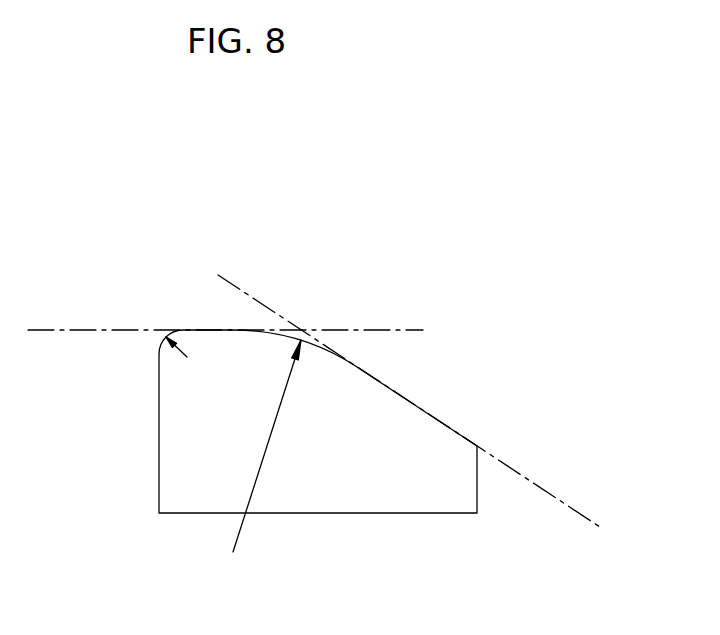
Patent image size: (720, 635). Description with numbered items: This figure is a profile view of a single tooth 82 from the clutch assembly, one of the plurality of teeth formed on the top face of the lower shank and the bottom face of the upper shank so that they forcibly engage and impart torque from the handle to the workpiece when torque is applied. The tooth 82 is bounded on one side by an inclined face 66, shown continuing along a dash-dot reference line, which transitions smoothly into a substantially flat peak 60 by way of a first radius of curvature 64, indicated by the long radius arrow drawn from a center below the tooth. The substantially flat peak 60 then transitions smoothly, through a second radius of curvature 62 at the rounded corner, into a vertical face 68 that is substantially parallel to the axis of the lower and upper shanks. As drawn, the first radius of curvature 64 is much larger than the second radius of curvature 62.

The substantially flat peak 60 is at (102, 330).
The second radius of curvature 62 is at (187, 357).
The first radius of curvature 64 is at (282, 405).
The inclined face 66 is at (545, 495).
The vertical face 68 is at (159, 485).
The tooth 82 is at (468, 345).